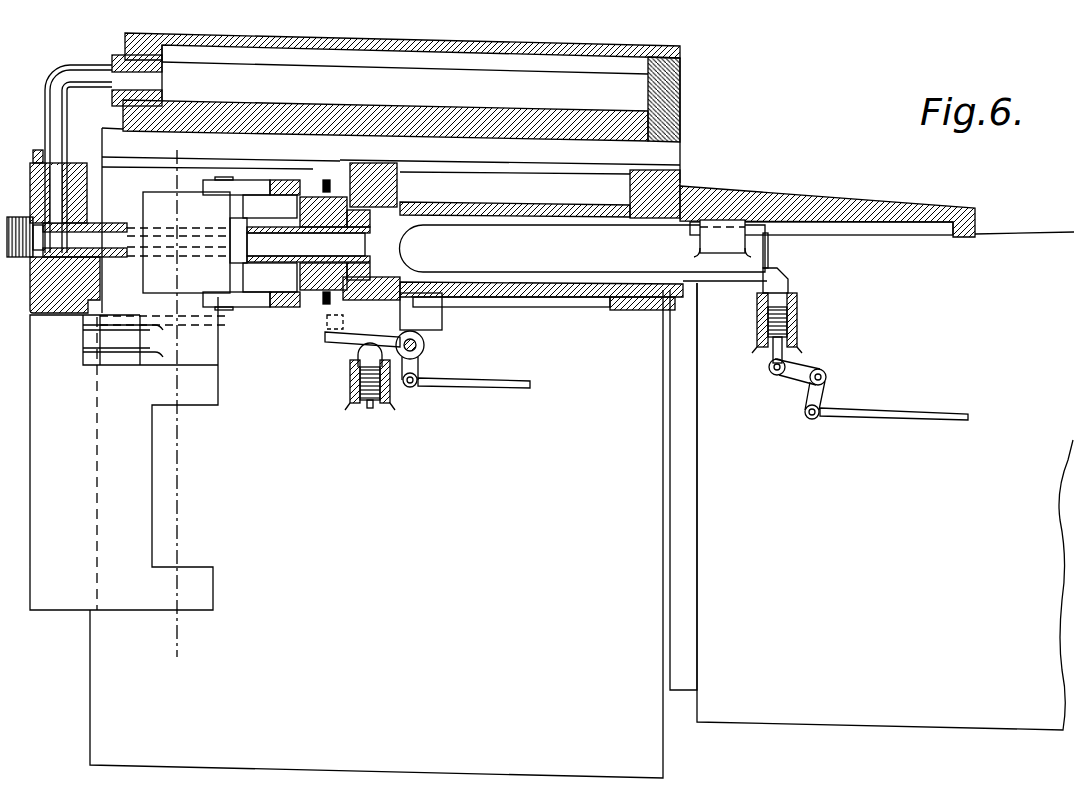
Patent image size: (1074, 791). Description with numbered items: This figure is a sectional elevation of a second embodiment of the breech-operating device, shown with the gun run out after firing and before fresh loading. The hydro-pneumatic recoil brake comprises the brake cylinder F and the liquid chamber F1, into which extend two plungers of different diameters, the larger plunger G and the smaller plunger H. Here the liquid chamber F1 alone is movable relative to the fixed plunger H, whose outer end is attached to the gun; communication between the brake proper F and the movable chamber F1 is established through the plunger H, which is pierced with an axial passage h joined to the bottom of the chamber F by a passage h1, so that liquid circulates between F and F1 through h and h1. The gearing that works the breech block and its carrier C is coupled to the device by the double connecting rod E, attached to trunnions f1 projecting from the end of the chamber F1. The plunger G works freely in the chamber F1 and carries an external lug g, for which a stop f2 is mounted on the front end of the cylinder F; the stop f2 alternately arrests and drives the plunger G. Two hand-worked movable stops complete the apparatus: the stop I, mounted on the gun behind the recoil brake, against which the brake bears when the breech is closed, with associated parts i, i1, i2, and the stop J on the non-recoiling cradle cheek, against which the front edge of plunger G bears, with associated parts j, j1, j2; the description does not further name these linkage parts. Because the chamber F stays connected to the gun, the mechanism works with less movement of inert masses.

The recoil brake cylinder F is at (480, 44).
The liquid chamber F1 is at (583, 297).
The trunnions f1 is at (327, 180).
The stop f2 is at (970, 222).
The double connecting rod E is at (248, 187).
The plunger of smaller diameter H is at (262, 258).
The axial passage h is at (290, 243).
The passage h1 is at (43, 110).
The plunger of larger diameter G is at (538, 258).
The lug g is at (722, 222).
The movable stop I is at (336, 333).
The pivoted link i is at (424, 350).
The rod i1 is at (468, 383).
The spring cylinder i2 is at (372, 356).
The movable stop J is at (776, 282).
The bell-crank link j is at (801, 373).
The rod j1 is at (880, 411).
The spring cylinder j2 is at (793, 310).
The carrier C is at (58, 455).